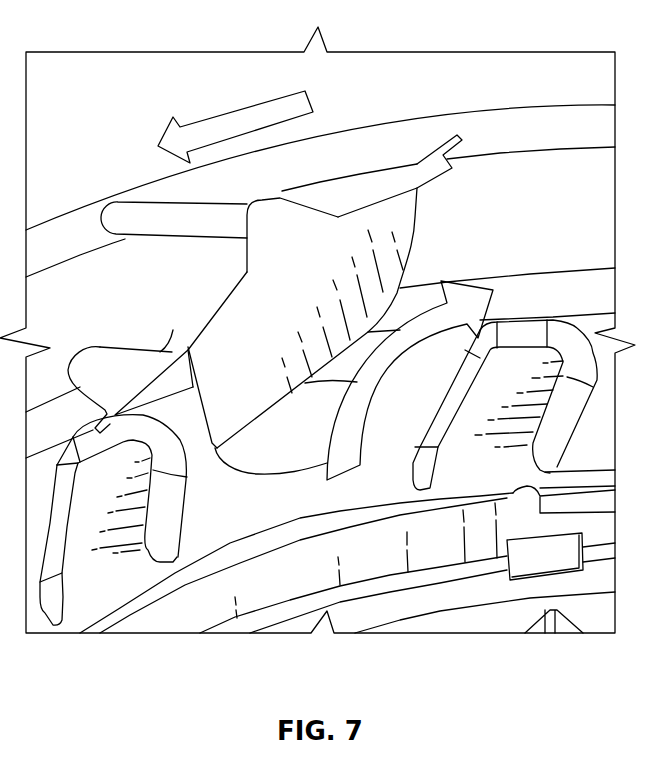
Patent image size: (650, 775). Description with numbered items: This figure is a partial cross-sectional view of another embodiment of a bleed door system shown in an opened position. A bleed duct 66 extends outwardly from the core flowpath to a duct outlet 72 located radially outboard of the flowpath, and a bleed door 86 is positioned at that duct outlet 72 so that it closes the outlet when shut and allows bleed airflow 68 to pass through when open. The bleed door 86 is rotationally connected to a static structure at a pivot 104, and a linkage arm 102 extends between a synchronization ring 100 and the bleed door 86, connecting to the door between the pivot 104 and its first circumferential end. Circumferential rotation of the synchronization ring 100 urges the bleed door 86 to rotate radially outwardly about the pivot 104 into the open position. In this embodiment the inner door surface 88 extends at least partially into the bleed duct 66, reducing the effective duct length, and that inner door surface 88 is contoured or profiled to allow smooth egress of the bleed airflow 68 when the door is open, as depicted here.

The synchronization ring 100 is at (545, 123).
The linkage arm 102 is at (152, 217).
The inner door surface 88 is at (387, 217).
The bleed door 86 is at (206, 333).
The pivot 104 is at (98, 362).
The duct outlet 72 is at (115, 437).
The bleed airflow 68 is at (363, 403).
The bleed duct 66 is at (224, 520).